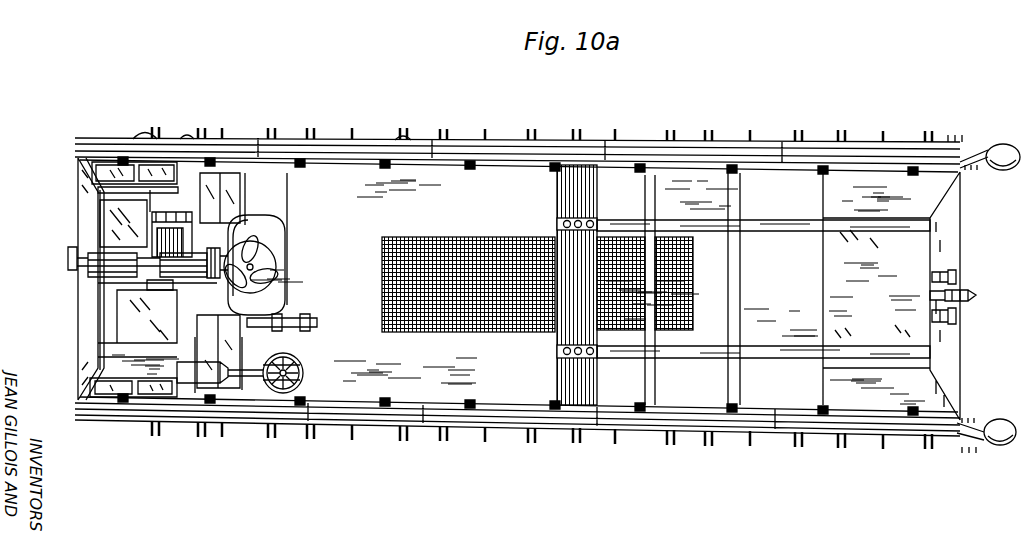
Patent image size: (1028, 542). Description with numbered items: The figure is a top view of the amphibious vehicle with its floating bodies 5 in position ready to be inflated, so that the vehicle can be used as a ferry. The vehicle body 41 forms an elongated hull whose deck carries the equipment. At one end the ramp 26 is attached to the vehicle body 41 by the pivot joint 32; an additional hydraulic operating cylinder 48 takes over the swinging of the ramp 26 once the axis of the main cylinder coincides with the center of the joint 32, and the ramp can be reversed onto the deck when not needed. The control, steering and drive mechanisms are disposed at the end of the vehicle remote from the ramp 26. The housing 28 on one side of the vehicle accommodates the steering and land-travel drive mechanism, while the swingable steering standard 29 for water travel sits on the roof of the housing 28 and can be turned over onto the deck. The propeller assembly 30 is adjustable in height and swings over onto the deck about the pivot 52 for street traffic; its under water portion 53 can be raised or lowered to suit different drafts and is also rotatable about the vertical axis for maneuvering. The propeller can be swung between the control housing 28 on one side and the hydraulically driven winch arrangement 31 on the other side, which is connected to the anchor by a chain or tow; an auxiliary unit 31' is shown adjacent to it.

The guard rail with fenders 5 is at (153, 138).
The ramp 26 is at (685, 353).
The housing 28 is at (104, 167).
The operating mechanism 29 is at (255, 380).
The propeller assembly 30 is at (183, 265).
The winch arrangement 31 is at (103, 220).
The auxiliary engine unit 31' is at (216, 219).
The joint 32 is at (955, 283).
The vehicle body 41 is at (503, 183).
The hydraulic operating cylinder 48 is at (973, 297).
The pivot 52 is at (72, 258).
The under water portion 53 is at (283, 252).